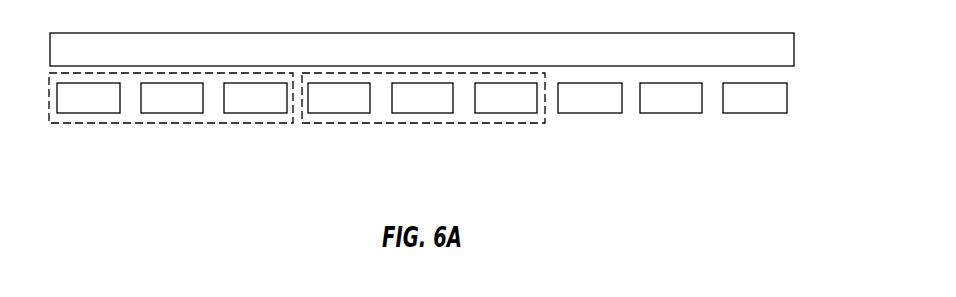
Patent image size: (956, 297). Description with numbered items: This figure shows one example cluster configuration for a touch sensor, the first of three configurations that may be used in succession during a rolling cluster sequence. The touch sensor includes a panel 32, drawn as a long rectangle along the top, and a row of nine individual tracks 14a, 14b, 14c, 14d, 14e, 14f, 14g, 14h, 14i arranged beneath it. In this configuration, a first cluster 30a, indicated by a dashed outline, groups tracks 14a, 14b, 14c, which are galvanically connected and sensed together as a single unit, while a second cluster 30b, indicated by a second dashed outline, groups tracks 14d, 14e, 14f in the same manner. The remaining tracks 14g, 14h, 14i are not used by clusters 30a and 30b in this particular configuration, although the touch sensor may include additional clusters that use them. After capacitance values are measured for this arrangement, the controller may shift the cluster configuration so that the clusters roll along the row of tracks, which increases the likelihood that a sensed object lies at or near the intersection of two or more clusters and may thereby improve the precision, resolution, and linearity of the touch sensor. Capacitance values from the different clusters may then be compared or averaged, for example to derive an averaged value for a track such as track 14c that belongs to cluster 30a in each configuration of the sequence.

The panel 32 is at (768, 50).
The cluster 30a is at (123, 123).
The cluster 30b is at (433, 123).
The track 14a is at (87, 100).
The track 14b is at (171, 100).
The track 14c is at (254, 100).
The track 14d is at (338, 100).
The track 14e is at (422, 100).
The track 14f is at (505, 100).
The track 14g is at (588, 100).
The track 14h is at (670, 100).
The track 14i is at (753, 100).